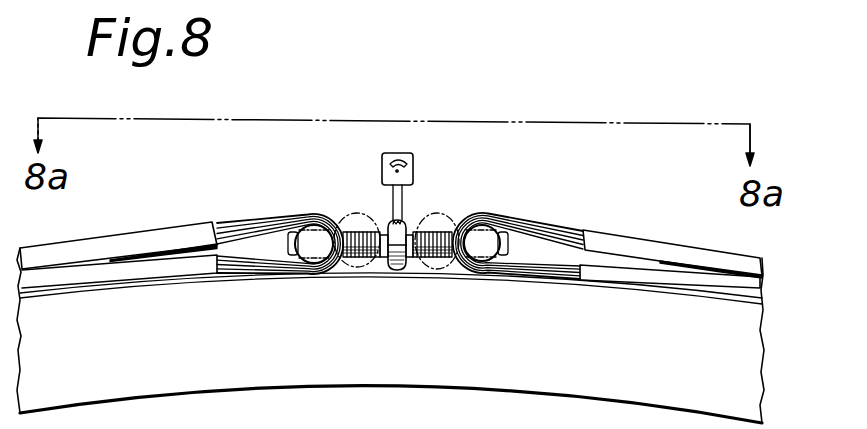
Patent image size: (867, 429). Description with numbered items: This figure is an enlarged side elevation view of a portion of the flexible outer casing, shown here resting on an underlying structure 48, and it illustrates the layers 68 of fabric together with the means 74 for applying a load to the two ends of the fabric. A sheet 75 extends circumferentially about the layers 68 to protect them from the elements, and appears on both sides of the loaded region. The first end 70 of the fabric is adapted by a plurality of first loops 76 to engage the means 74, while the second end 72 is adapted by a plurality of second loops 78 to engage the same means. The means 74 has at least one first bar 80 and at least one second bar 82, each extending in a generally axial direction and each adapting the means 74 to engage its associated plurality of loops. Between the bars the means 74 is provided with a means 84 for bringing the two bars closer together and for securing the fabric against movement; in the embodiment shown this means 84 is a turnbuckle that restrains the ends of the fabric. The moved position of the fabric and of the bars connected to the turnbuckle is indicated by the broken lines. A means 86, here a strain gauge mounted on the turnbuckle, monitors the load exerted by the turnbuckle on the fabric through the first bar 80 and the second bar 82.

The base body 48 is at (135, 356).
The sheet 75 is at (117, 236).
The layers 68 is at (228, 228).
The first bar 80 is at (315, 243).
The first loops 76 is at (347, 213).
The first end 70 is at (343, 250).
The means for monitoring the load 86 is at (413, 157).
The means for bringing the two bars closer together 84 is at (388, 238).
The means for applying a load 74 is at (401, 273).
The second end 72 is at (454, 263).
The second loops 78 is at (462, 223).
The second bar 82 is at (483, 247).